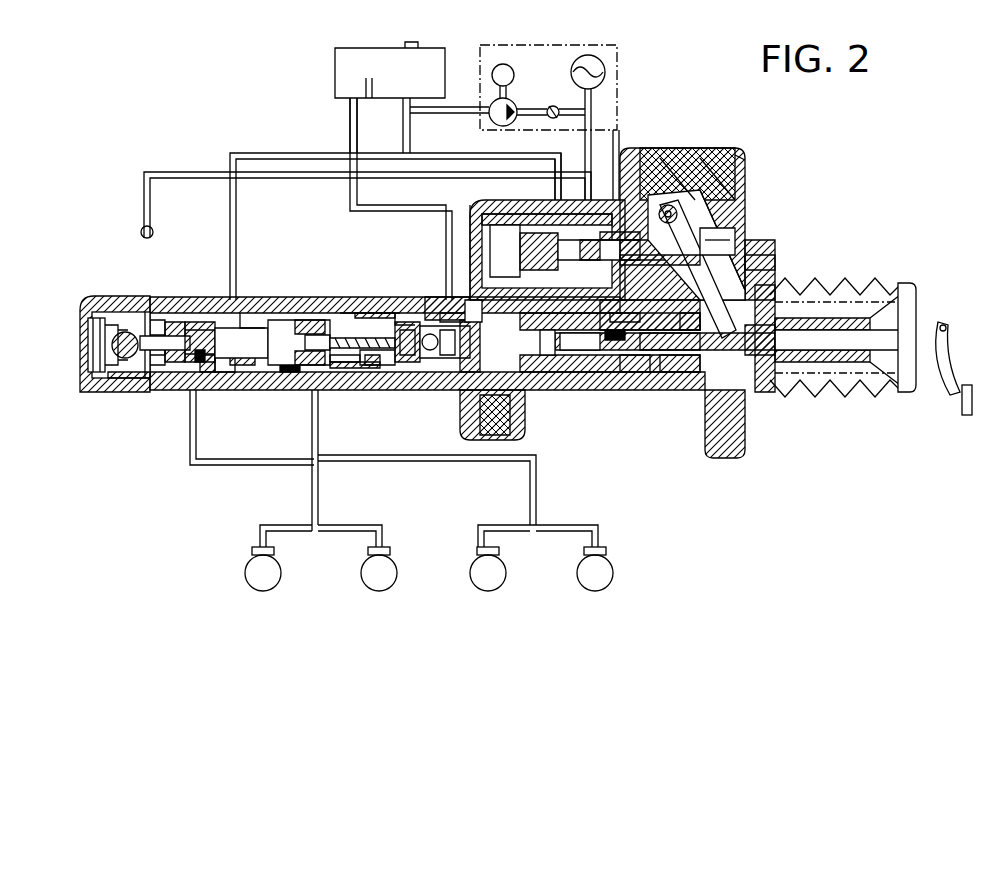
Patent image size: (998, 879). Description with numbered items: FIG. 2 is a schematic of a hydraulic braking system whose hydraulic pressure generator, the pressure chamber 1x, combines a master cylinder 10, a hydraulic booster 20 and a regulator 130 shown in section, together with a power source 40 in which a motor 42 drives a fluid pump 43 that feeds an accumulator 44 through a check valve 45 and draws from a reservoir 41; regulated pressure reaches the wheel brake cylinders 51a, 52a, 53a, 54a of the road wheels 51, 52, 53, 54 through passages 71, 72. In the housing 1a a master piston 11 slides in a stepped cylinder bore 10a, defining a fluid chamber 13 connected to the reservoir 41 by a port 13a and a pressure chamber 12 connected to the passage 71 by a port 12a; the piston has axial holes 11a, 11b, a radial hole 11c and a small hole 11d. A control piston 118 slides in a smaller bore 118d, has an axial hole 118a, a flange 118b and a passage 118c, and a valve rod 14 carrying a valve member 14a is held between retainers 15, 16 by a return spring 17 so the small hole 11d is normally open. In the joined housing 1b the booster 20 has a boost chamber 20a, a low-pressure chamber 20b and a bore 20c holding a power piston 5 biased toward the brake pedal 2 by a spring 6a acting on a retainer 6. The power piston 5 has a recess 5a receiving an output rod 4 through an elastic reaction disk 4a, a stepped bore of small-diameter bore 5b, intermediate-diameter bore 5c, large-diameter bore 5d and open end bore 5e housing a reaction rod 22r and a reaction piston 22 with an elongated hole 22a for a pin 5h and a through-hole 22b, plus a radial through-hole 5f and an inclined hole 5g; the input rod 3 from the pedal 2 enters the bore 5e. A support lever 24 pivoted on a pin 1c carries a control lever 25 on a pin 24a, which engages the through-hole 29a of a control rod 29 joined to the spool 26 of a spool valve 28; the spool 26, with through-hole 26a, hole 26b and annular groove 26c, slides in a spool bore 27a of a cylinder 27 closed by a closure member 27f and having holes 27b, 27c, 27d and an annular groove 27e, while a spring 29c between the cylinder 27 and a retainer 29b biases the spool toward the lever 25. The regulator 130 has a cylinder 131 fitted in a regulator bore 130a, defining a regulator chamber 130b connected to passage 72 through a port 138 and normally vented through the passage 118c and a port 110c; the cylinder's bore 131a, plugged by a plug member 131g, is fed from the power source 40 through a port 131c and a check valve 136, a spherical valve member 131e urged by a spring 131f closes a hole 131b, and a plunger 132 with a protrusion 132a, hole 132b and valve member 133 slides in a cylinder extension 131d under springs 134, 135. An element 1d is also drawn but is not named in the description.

The housing 1a is at (400, 320).
The housing 1b is at (745, 170).
The pin 1c is at (722, 160).
The housing mounting flange 1d is at (722, 458).
The pressure chamber 1x is at (770, 262).
The brake pedal 2 is at (945, 380).
The input rod 3 is at (905, 392).
The output rod 4 is at (515, 395).
The elastic reaction disk 4a is at (515, 420).
The power piston 5 is at (680, 352).
The recess 5a is at (548, 372).
The small-diameter bore 5b is at (568, 372).
The intermediate-diameter bore 5c is at (592, 372).
The large-diameter bore 5d is at (662, 372).
The open end bore 5e is at (830, 352).
The through-hole 5f is at (760, 392).
The inclined hole 5g is at (640, 262).
The pin 5h is at (632, 372).
The retainer 6 is at (885, 392).
The spring 6a is at (880, 370).
The master cylinder 10 is at (337, 300).
The cylinder bore 10a is at (348, 312).
The master piston 11 is at (435, 362).
The hole 11a is at (398, 362).
The hole 11b is at (465, 372).
The hole 11c is at (426, 352).
The small hole 11d is at (445, 358).
The pressure chamber 12 is at (338, 372).
The port 12a is at (328, 368).
The fluid chamber 13 is at (435, 300).
The port 13a is at (448, 313).
The valve rod 14 is at (358, 368).
The valve member 14a is at (372, 365).
The retainer 15 is at (390, 313).
The retainer 16 is at (312, 330).
The return spring 17 is at (362, 338).
The hydraulic booster 20 is at (745, 200).
The boost chamber 20a is at (722, 195).
The low-pressure chamber 20b is at (468, 305).
The bore 20c is at (616, 372).
The reaction piston 22 is at (640, 300).
The elongated hole 22a is at (680, 372).
The through-hole 22b is at (690, 372).
The reaction rod 22r is at (622, 372).
The support lever 24 is at (745, 250).
The pin 24a is at (748, 272).
The control lever 25 is at (775, 290).
The spool 26 is at (552, 240).
The through-hole 26a is at (612, 240).
The hole 26b is at (628, 240).
The annular groove 26c is at (622, 232).
The cylinder 27 is at (500, 200).
The spool bore 27a is at (505, 214).
The hole 27b is at (538, 233).
The hole 27c is at (560, 200).
The hole 27d is at (500, 250).
The annular groove 27e is at (590, 200).
The closure member 27f is at (474, 205).
The spool valve 28 is at (450, 212).
The control rod 29 is at (722, 236).
The through-hole 29a is at (695, 222).
The retainer 29b is at (712, 165).
The spring 29c is at (690, 150).
The power source 40 is at (618, 66).
The reservoir 41 is at (335, 74).
The motor 42 is at (510, 68).
The fluid pump 43 is at (512, 100).
The accumulator 44 is at (571, 70).
The check valve 45 is at (553, 106).
The road wheel 51 is at (281, 572).
The wheel brake cylinder 51a is at (274, 552).
The road wheel 52 is at (397, 572).
The wheel brake cylinder 52a is at (390, 552).
The road wheel 53 is at (506, 572).
The wheel brake cylinder 53a is at (499, 552).
The road wheel 54 is at (613, 572).
The wheel brake cylinder 54a is at (606, 552).
The passage 71 is at (322, 478).
The passage 72 is at (232, 465).
The port 110c is at (240, 300).
The control piston 118 is at (278, 322).
The hole 118a is at (298, 320).
The flange 118b is at (226, 372).
The passage 118c is at (248, 318).
The bore 118d is at (290, 372).
The regulator 130 is at (178, 312).
The regulator bore 130a is at (122, 390).
The regulator chamber 130b is at (240, 365).
The cylinder 131 is at (95, 392).
The bore 131a is at (142, 392).
The hole 131b is at (152, 388).
The port 131c is at (135, 320).
The cylinder extension 131d is at (158, 380).
The spherical valve member 131e is at (140, 320).
The spring 131f is at (153, 312).
The plug member 131g is at (118, 318).
The plunger 132 is at (195, 322).
The protrusion 132a is at (188, 322).
The hole 132b is at (205, 322).
The valve member 133 is at (255, 345).
The spring 134 is at (170, 372).
The spring 135 is at (205, 372).
The check valve 136 is at (143, 228).
The port 138 is at (203, 362).